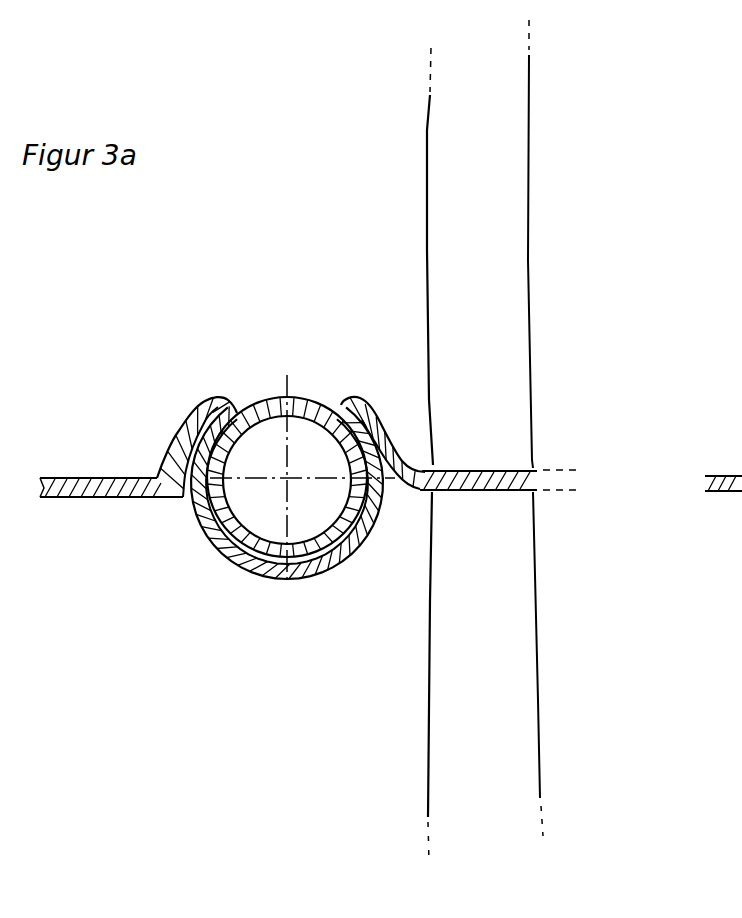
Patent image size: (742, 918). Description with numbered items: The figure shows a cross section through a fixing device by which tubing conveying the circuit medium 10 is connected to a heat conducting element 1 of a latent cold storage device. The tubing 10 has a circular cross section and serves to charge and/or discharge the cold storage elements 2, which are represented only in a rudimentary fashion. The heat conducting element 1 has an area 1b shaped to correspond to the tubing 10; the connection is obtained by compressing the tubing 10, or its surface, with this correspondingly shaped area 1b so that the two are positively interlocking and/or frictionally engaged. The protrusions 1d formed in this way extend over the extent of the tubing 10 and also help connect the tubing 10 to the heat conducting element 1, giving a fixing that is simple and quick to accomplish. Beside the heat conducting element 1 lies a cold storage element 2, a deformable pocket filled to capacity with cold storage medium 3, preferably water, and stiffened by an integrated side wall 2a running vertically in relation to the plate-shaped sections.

The heat conducting element 1 is at (130, 487).
The area provided for the tube 1b is at (262, 570).
The protrusions 1d is at (352, 392).
The cold storage element 2 is at (429, 129).
The side wall 2a is at (530, 240).
The cold storage medium 3 is at (558, 187).
The tubing conveying the circuit medium 10 is at (305, 548).